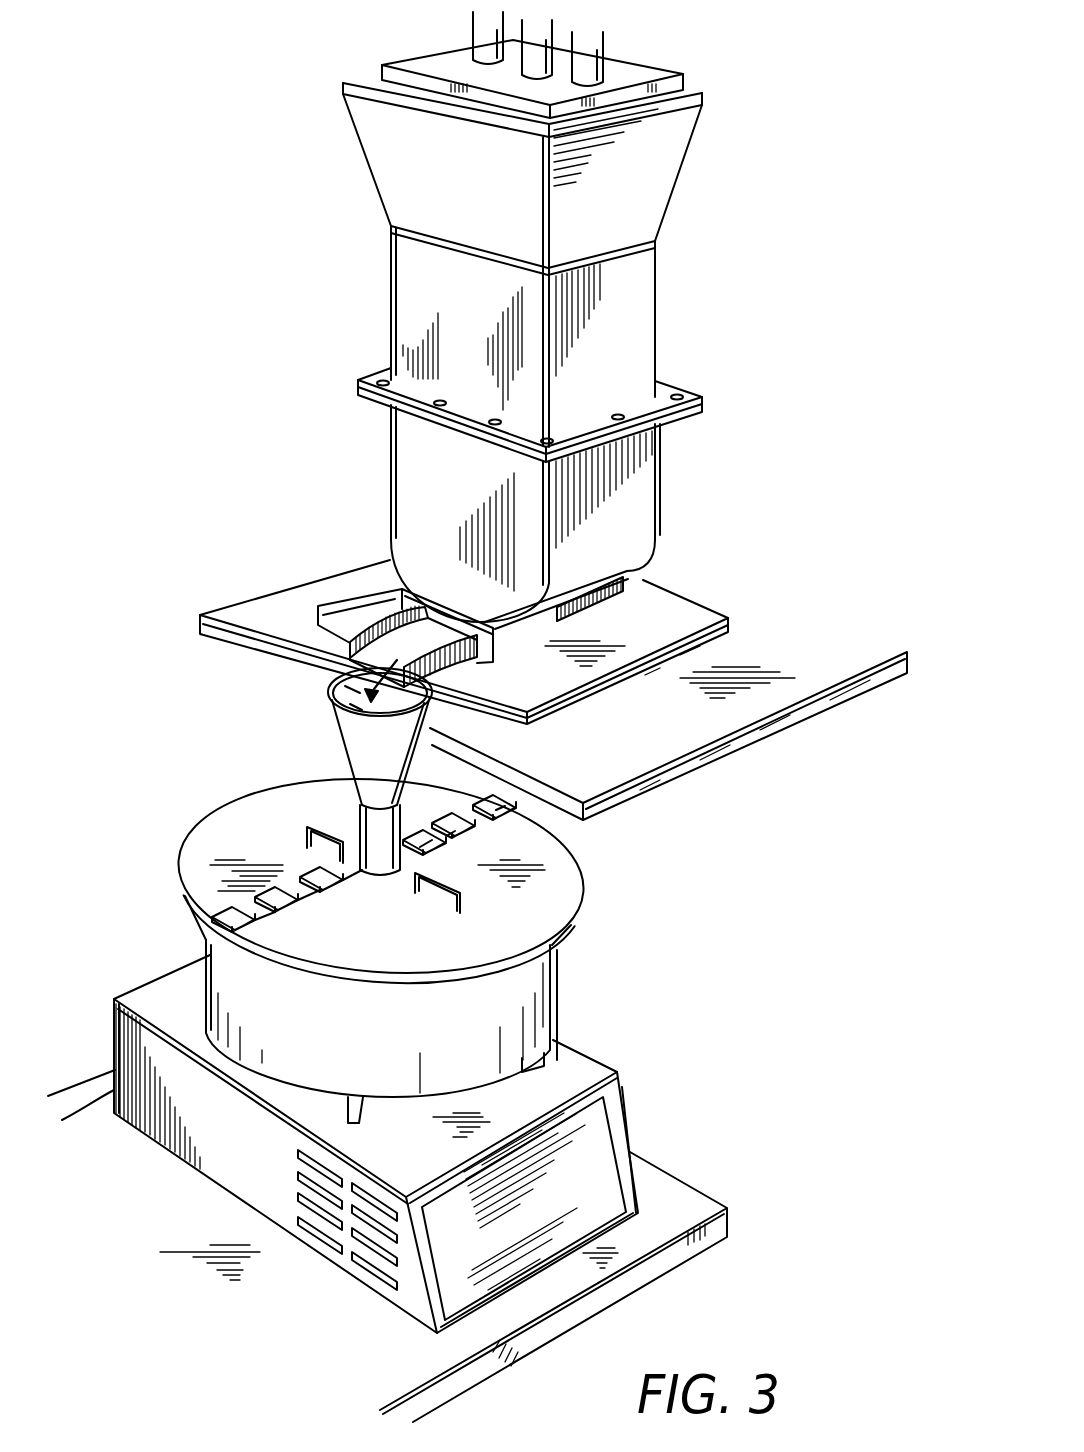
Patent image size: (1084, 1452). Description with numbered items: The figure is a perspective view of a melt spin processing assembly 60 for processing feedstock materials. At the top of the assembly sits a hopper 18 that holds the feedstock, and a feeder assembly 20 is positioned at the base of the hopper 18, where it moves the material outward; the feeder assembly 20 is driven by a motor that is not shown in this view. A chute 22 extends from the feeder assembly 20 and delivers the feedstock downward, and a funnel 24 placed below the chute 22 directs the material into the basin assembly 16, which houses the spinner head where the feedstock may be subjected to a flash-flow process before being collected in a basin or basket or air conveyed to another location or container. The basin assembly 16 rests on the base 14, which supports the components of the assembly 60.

The melt spin processing assembly 60 is at (258, 372).
The hopper 18 is at (635, 313).
The feeder assembly 20 is at (627, 590).
The chute 22 is at (390, 627).
The funnel 24 is at (360, 747).
The basin assembly 16 is at (558, 983).
The base 14 is at (627, 1098).